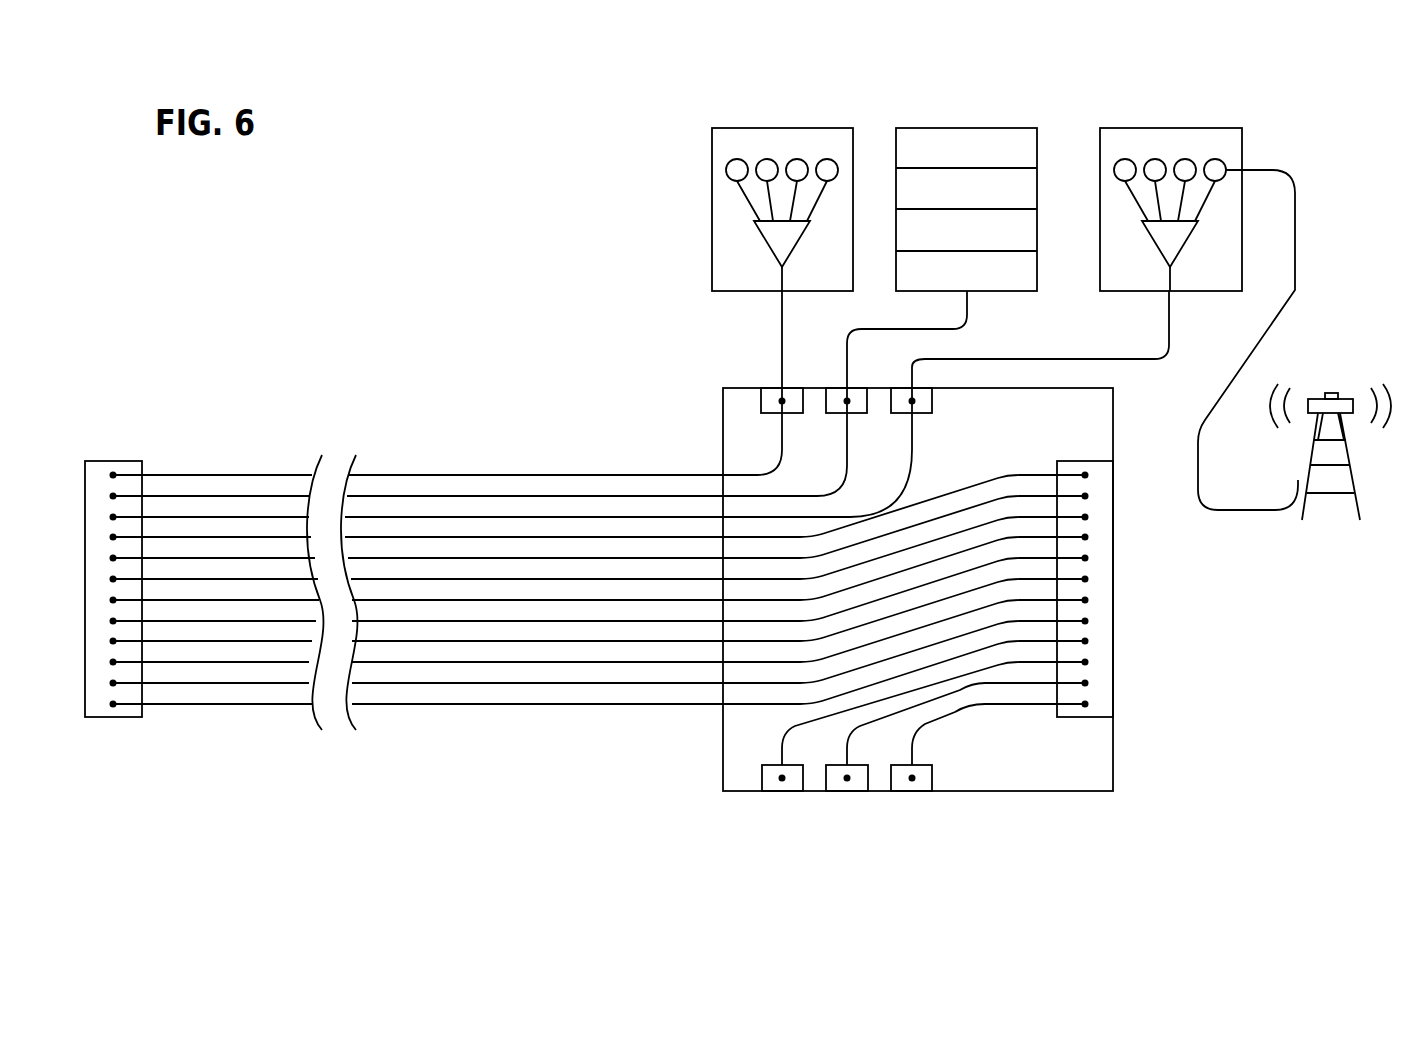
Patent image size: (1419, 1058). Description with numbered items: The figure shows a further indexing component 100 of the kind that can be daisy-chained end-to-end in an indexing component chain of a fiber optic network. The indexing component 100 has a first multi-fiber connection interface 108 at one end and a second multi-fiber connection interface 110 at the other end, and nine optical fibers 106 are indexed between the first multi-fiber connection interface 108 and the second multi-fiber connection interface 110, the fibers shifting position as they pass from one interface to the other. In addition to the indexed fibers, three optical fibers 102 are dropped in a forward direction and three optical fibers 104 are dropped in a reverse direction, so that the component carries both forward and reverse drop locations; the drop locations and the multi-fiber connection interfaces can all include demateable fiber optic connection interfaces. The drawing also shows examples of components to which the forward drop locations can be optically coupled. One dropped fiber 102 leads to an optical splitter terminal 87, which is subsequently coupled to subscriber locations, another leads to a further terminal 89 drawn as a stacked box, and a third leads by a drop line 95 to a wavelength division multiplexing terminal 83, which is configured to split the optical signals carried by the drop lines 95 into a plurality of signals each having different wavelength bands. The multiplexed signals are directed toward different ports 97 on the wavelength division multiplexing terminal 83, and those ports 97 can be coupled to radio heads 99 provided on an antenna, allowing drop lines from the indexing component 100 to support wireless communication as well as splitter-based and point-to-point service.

The indexing component 100 is at (262, 410).
The optical fibers 106 is at (632, 600).
The first multi-fiber connection interface 108 is at (115, 718).
The second multi-fiber connection interface 110 is at (1097, 718).
The optical fibers 102 is at (957, 432).
The optical fibers 104 is at (787, 740).
The drop lines 95 is at (1071, 358).
The optical splitter terminal 87 is at (712, 210).
The memory module 89 is at (1022, 126).
The wavelength division multiplexing terminal 83 is at (1200, 293).
The ports 97 is at (1120, 160).
The radio heads 99 is at (1313, 398).